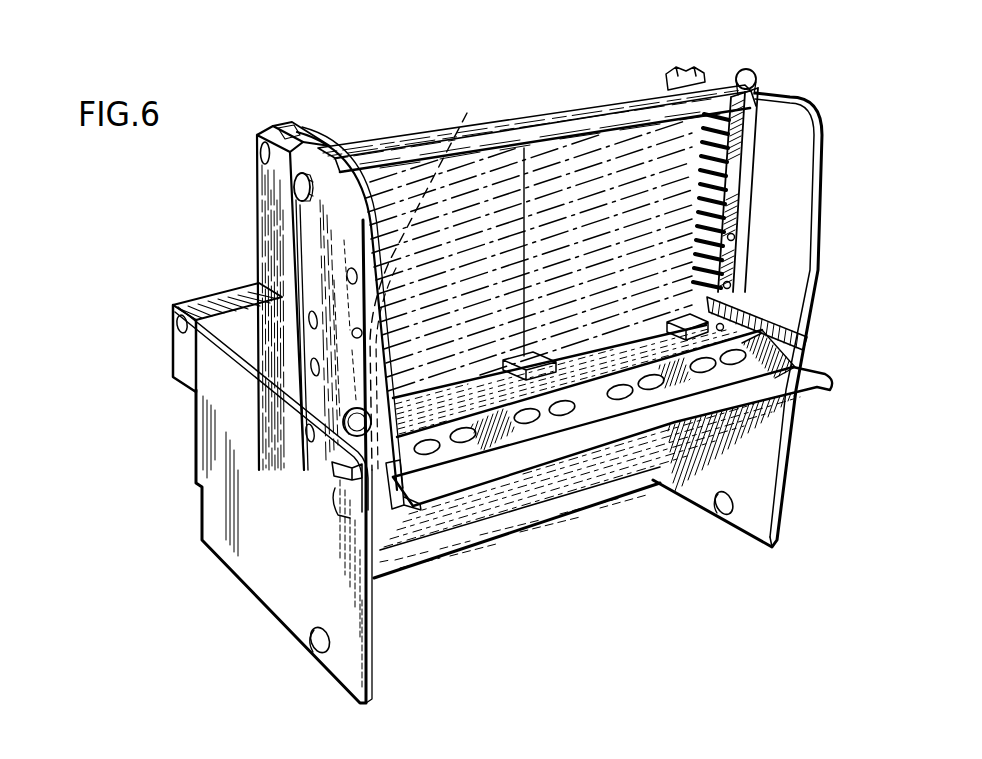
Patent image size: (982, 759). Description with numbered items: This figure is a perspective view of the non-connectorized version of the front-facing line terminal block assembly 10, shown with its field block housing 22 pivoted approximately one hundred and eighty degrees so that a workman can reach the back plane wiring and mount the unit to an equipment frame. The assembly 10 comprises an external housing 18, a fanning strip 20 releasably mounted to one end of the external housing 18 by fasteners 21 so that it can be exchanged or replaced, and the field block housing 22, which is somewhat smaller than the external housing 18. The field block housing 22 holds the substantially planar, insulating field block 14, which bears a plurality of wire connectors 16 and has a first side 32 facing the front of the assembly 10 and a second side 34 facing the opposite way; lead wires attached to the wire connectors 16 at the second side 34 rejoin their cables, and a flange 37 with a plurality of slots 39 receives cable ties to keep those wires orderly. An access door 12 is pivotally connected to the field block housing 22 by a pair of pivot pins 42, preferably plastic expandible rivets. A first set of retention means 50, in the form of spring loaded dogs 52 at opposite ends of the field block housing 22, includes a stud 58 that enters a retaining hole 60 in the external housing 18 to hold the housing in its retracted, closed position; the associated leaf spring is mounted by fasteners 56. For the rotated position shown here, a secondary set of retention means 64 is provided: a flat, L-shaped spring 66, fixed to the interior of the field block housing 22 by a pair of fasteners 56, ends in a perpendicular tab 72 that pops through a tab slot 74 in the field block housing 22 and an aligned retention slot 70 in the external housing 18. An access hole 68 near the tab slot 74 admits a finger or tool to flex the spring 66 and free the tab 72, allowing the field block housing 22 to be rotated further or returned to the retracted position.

The terminal block assembly 10 is at (206, 200).
The access door 12 is at (258, 132).
The field block 14 is at (404, 128).
The wire connectors 16 is at (732, 138).
The external housing 18 is at (241, 545).
The fanning strip 20 is at (253, 290).
The fasteners 21 is at (176, 324).
The field block housing 22 is at (340, 377).
The first side 32 is at (512, 108).
The second side 34 is at (388, 238).
The flange 37 is at (596, 400).
The slots 39 is at (530, 410).
The pivot pins 42 is at (260, 153).
The first set of retention means 50 is at (306, 218).
The spring loaded dogs 52 is at (300, 481).
The fasteners 56 is at (347, 281).
The stud 58 is at (292, 189).
The retaining hole 60 is at (318, 642).
The secondary set of retention means 64 is at (345, 405).
The spring 66 is at (282, 452).
The access hole 68 is at (332, 478).
The retention slot 70 is at (362, 520).
The tab 72 is at (355, 485).
The tab slot 74 is at (404, 574).